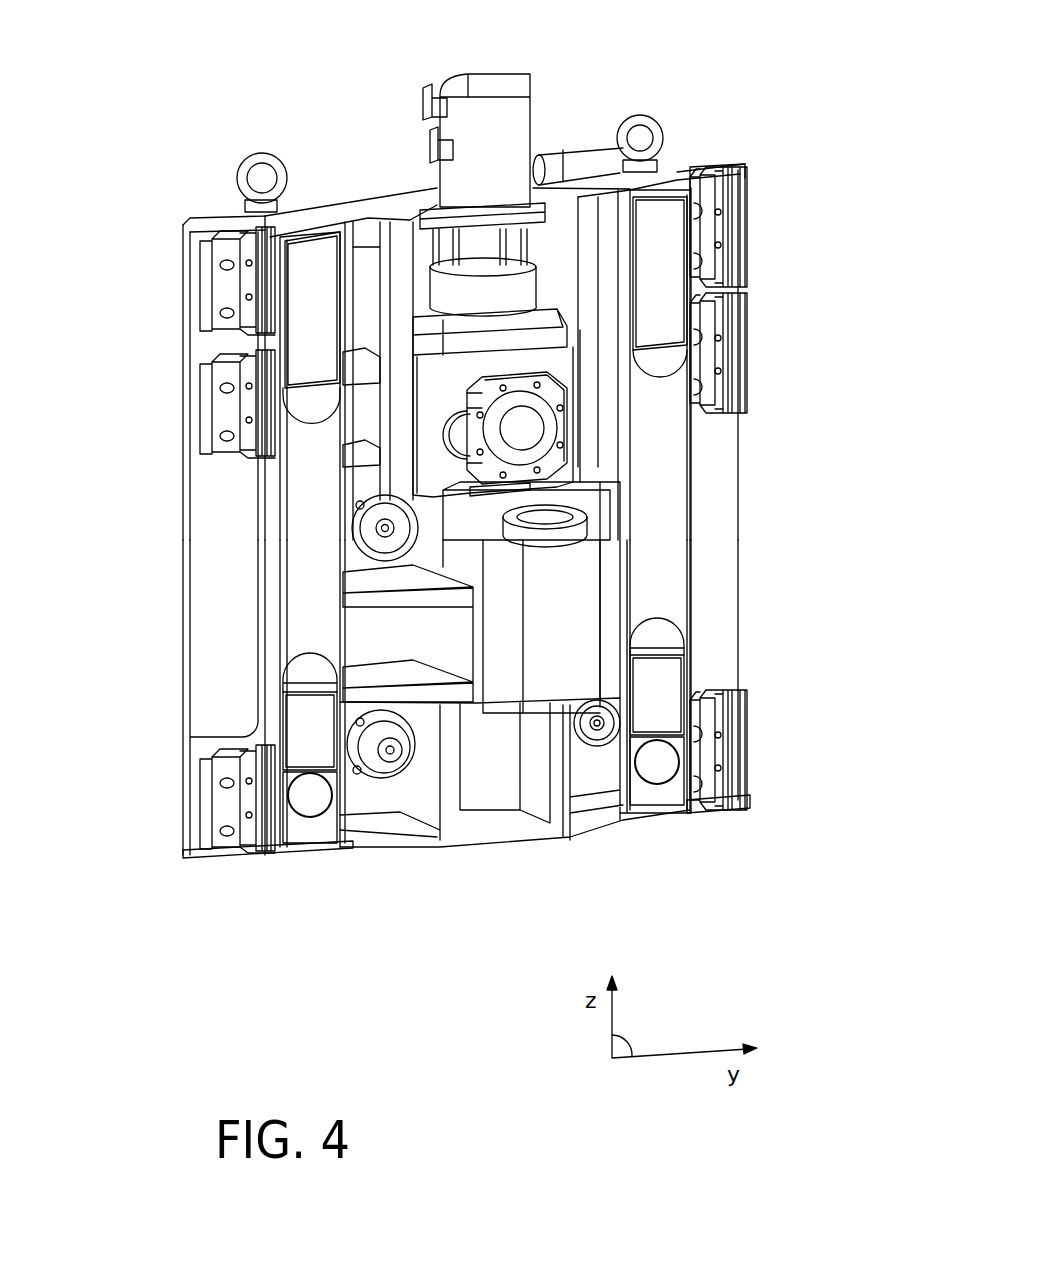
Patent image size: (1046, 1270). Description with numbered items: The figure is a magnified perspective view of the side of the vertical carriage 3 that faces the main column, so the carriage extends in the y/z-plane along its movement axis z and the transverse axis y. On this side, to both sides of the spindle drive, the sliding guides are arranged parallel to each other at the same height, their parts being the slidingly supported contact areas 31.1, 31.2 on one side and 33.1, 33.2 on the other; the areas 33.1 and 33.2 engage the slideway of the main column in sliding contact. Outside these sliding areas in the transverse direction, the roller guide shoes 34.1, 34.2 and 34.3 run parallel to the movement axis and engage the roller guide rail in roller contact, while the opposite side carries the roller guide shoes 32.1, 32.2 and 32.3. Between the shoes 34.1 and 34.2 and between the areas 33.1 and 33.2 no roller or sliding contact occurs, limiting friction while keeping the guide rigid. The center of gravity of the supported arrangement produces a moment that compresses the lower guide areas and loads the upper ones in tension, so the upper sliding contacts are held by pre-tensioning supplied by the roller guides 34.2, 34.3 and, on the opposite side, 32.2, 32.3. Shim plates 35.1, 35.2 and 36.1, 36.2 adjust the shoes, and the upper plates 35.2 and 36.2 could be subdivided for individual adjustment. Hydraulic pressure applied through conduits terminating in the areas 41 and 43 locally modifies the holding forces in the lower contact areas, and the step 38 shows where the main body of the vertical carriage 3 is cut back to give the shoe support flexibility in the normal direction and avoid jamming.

The vertical carriage 3 is at (770, 481).
The slidingly supported contact area 31.1 is at (666, 805).
The slidingly supported contact area 31.2 is at (673, 190).
The roller guide shoe 32.1 is at (748, 741).
The roller guide shoe 32.2 is at (755, 343).
The roller guide shoe 32.3 is at (760, 215).
The slidingly supported contact area 33.1 is at (295, 847).
The slidingly supported contact area 33.2 is at (333, 233).
The roller guide shoe 34.1 is at (215, 837).
The roller guide shoe 34.2 is at (215, 399).
The roller guide shoe 34.3 is at (215, 278).
The shim plate 35.1 is at (733, 690).
The shim plate 35.2 is at (748, 163).
The shim plate 36.1 is at (203, 749).
The shim plate 36.2 is at (207, 233).
The step 38 is at (234, 212).
The hydraulic pressure area 41 is at (647, 767).
The hydraulic pressure area 43 is at (307, 805).